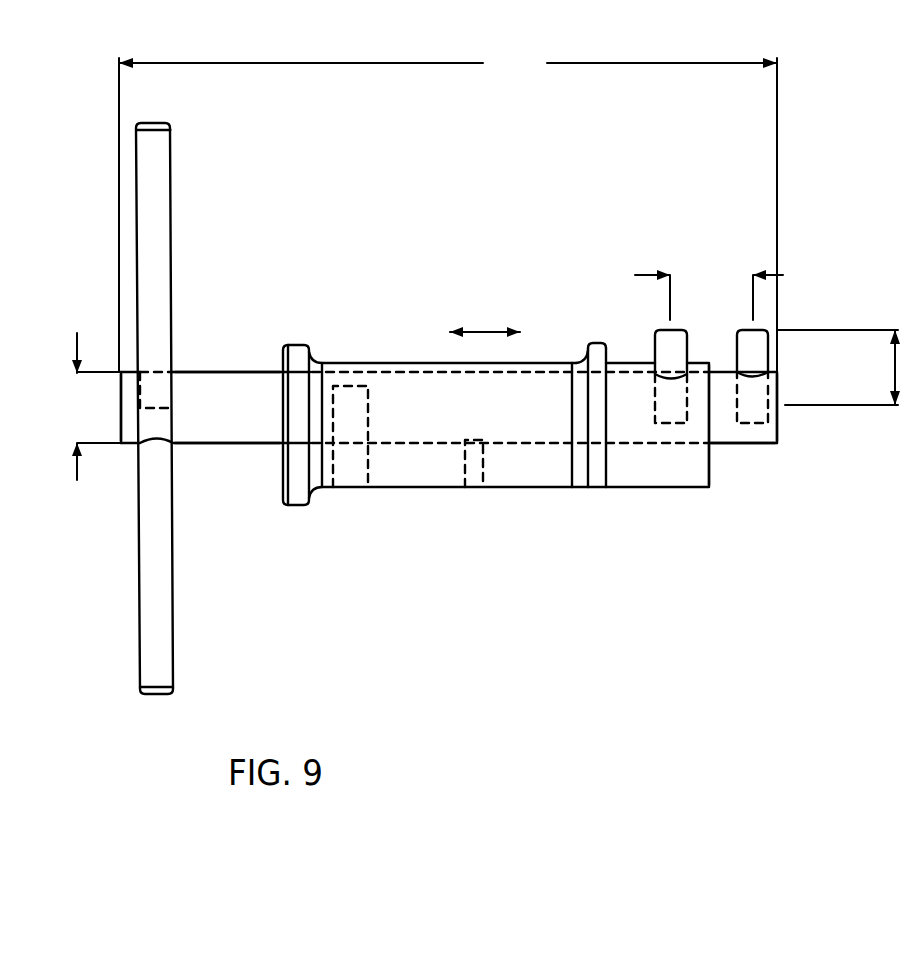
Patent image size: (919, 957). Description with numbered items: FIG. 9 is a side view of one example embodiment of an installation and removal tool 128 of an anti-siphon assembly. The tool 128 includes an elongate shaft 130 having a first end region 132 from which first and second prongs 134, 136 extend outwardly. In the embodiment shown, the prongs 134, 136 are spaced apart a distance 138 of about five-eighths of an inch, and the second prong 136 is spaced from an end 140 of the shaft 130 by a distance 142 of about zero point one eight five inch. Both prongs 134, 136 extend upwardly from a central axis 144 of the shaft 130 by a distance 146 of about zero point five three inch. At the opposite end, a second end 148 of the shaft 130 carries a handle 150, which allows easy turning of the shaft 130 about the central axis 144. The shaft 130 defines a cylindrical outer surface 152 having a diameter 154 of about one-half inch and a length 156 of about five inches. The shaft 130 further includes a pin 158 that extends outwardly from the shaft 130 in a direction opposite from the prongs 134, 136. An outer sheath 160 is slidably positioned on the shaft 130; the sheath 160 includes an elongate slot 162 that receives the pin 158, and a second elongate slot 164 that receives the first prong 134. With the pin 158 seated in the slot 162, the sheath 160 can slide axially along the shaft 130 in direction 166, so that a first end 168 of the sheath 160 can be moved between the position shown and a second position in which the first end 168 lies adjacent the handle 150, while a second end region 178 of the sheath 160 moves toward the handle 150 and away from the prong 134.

The installation and removal tool 128 is at (228, 385).
The elongate shaft 130 is at (225, 437).
The first end region 132 is at (760, 432).
The first prong 134 is at (637, 325).
The second prong 136 is at (737, 330).
The distance 138 is at (736, 288).
The end of shaft 140 is at (778, 430).
The distance 142 is at (838, 310).
The central axis 144 is at (855, 405).
The distance 146 is at (839, 367).
The second end of shaft 148 is at (130, 445).
The handle 150 is at (165, 207).
The cylindrical outer surface 152 is at (193, 388).
The diameter 154 is at (89, 406).
The length 156 is at (448, 210).
The pin 158 is at (370, 385).
The outer sheath 160 is at (528, 383).
The elongate slot 162 is at (483, 472).
The second elongate slot 164 is at (690, 333).
The direction 166 is at (468, 330).
The first end of sheath 168 is at (283, 500).
The second end region of sheath 178 is at (697, 473).